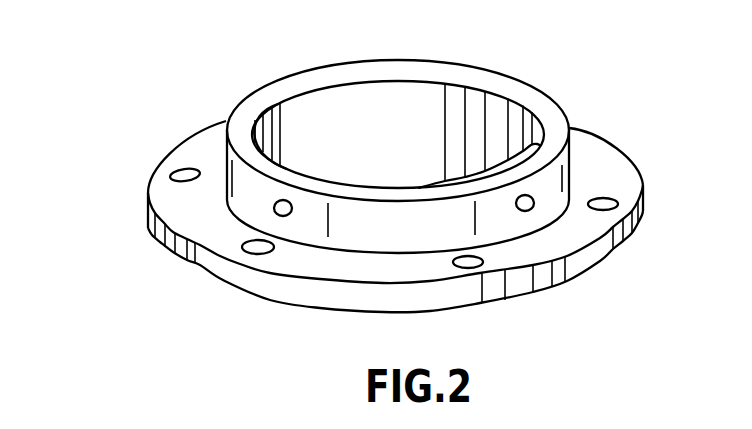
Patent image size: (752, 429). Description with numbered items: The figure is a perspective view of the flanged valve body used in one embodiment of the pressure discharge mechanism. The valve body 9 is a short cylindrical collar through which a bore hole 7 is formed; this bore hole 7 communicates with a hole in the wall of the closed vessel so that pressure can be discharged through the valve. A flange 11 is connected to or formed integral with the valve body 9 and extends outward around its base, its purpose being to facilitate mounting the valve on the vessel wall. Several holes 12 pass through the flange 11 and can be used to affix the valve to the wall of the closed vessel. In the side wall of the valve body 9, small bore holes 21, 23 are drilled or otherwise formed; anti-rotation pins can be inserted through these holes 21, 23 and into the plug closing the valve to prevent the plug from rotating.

The bore hole 7 is at (412, 112).
The valve body 9 is at (548, 174).
The flange 11 is at (322, 263).
The holes 12 is at (481, 270).
The small bore hole 21 is at (277, 204).
The small bore hole 23 is at (637, 180).